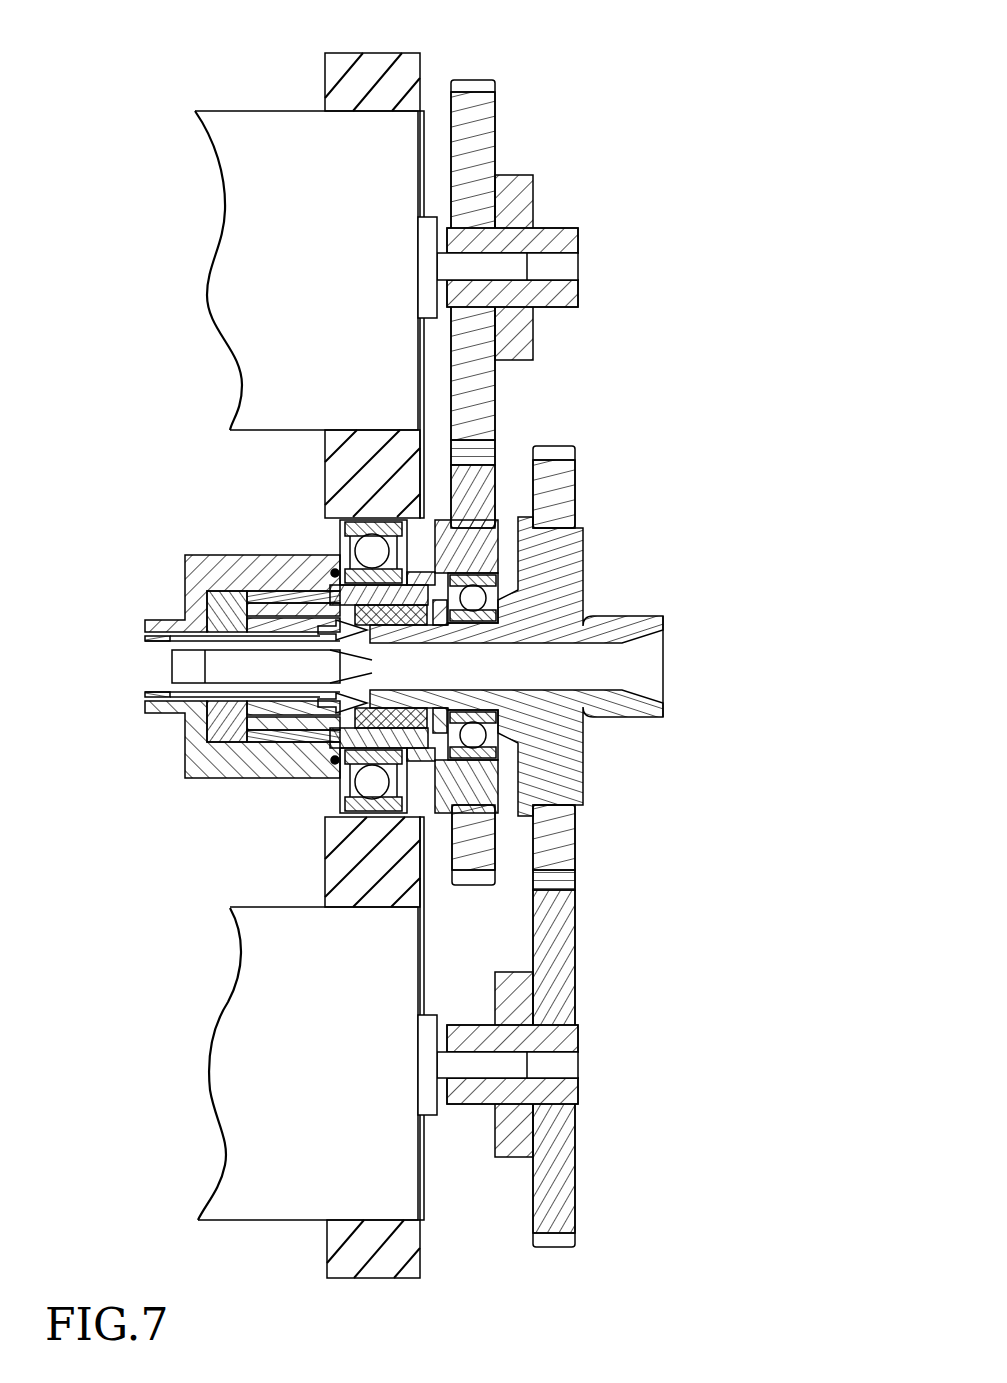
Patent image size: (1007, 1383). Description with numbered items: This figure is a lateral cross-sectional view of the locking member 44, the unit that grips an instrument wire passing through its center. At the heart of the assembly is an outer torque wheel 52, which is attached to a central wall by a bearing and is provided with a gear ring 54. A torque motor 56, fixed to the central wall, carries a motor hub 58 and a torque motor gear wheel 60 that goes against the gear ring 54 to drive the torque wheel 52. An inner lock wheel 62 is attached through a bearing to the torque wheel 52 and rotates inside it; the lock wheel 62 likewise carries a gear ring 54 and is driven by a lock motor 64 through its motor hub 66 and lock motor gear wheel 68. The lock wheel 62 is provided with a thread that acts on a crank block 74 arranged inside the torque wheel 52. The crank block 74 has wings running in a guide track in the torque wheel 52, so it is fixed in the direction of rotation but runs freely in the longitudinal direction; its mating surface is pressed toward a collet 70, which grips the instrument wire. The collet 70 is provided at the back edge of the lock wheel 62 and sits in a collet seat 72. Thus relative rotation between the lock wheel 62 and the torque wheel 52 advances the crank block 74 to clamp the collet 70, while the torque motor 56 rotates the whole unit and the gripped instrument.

The locking member 44 is at (586, 82).
The torque wheel 52 is at (497, 575).
The gear ring 54 is at (574, 842).
The torque motor 56 is at (253, 203).
The motor hub 58 is at (555, 235).
The torque motor gear wheel 60 is at (478, 386).
The lock wheel 62 is at (585, 612).
The lock motor 64 is at (258, 1008).
The motor hub 66 is at (560, 1030).
The lock motor gear wheel 68 is at (566, 1002).
The collet 70 is at (315, 630).
The collet seat 72 is at (220, 613).
The crank block 74 is at (330, 738).